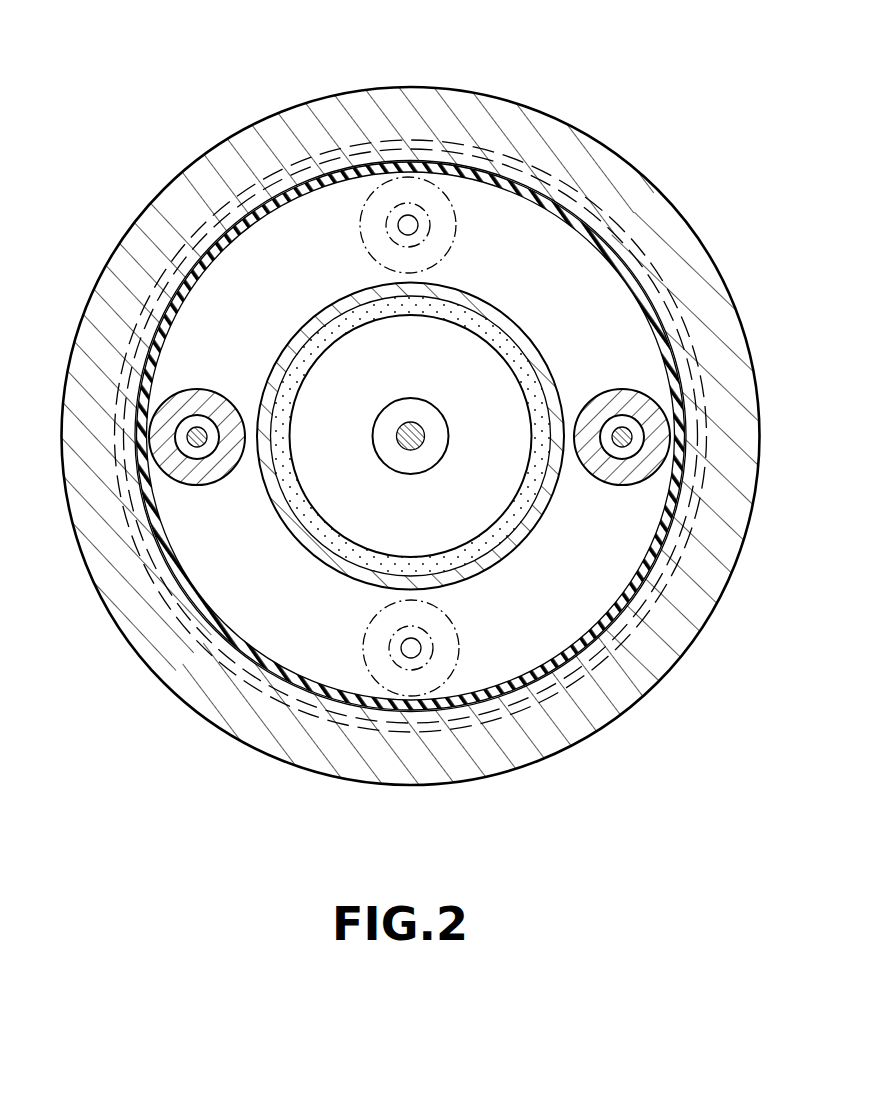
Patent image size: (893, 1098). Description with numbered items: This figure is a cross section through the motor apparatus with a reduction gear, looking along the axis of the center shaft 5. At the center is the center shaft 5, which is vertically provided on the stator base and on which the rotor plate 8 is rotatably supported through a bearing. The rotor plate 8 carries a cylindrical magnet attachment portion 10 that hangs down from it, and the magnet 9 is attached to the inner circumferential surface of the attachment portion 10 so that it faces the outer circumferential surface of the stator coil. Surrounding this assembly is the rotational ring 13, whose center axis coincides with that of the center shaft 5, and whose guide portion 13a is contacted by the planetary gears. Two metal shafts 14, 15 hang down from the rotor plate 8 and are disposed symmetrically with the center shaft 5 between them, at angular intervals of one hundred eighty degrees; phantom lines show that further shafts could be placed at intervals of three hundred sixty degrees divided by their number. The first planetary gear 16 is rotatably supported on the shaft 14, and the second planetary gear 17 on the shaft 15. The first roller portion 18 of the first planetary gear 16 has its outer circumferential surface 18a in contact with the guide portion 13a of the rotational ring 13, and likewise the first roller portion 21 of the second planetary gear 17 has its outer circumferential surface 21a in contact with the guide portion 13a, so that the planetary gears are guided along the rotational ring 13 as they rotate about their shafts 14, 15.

The center shaft 5 is at (410, 443).
The rotor plate 8 is at (547, 258).
The magnet 9 is at (458, 320).
The magnet attachment portion 10 is at (517, 338).
The rotational ring 13 is at (483, 120).
The guide portion 13a is at (298, 672).
The shaft 14 is at (626, 443).
The shaft 15 is at (203, 430).
The first planetary gear 16 is at (597, 480).
The second planetary gear 17 is at (194, 389).
The first roller portion 18 is at (598, 412).
The outer circumferential surface 18a is at (613, 389).
The first roller portion 21 is at (225, 465).
The outer circumferential surface 21a is at (204, 487).